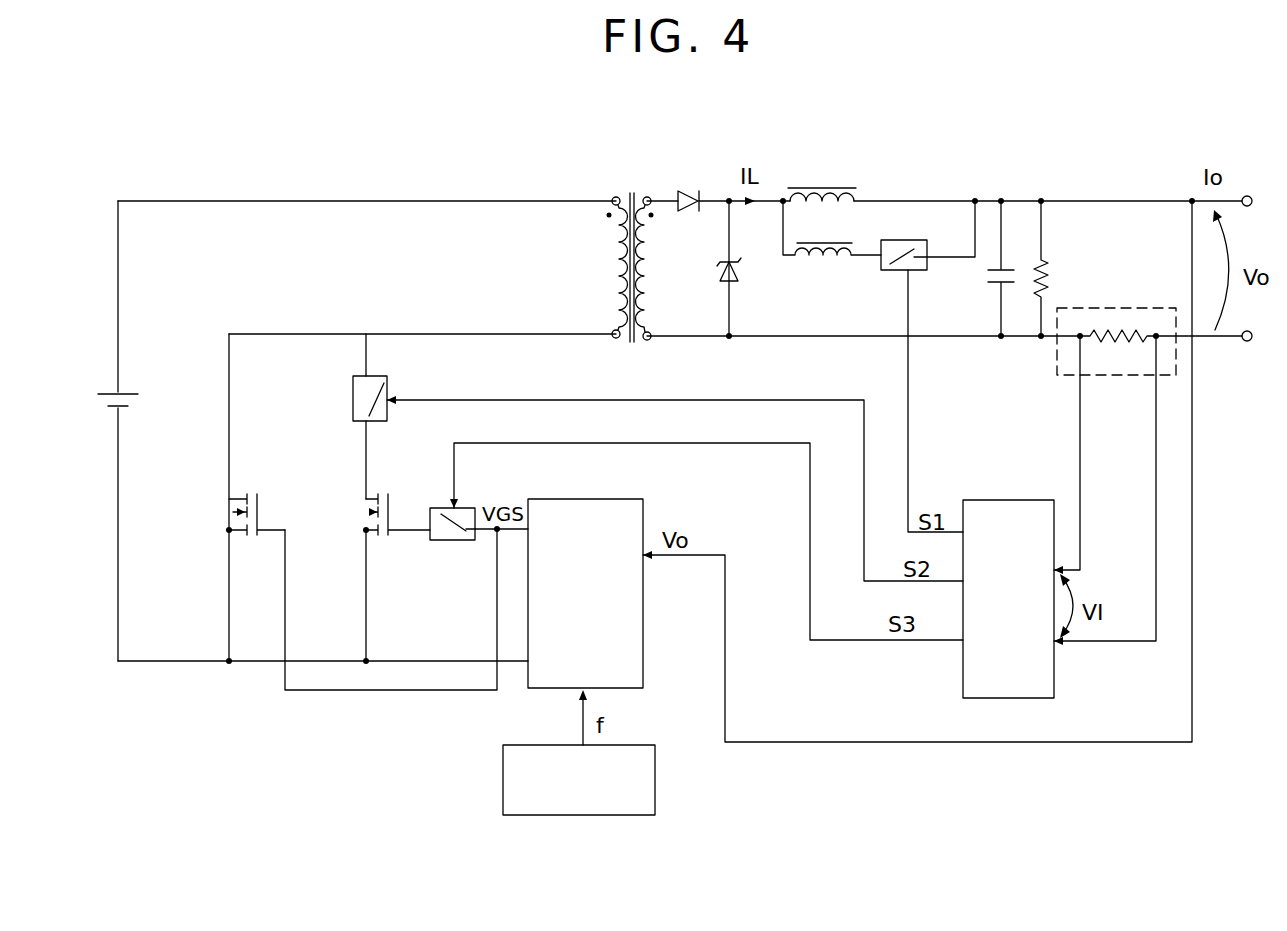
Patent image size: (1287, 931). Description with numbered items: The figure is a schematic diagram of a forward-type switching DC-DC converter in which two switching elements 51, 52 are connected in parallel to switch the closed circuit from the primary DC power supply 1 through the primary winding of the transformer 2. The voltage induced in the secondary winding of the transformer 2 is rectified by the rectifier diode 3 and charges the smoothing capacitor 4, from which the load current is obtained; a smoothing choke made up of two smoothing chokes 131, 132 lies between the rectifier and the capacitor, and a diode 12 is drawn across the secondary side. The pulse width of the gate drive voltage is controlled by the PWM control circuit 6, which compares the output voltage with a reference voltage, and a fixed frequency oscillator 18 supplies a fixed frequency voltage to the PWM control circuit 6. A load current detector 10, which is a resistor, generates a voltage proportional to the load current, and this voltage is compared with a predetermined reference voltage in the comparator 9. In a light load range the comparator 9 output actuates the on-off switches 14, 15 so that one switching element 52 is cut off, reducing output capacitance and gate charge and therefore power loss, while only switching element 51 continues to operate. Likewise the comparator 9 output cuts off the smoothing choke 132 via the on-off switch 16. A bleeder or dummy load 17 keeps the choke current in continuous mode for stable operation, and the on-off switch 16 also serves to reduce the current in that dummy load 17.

The primary DC power supply 1 is at (108, 392).
The transformer 2 is at (628, 193).
The rectifier diode 3 is at (690, 191).
The flywheel diode 12 is at (720, 276).
The smoothing choke 131 is at (826, 186).
The smoothing choke 132 is at (836, 251).
The on-off switch 16 is at (918, 243).
The smoothing capacitor 4 is at (1007, 269).
The dummy load 17 is at (1049, 269).
The load current detector 10 is at (1127, 308).
The on-off switch 15 is at (387, 378).
The switching element 51 is at (236, 496).
The switching element 52 is at (356, 503).
The on-off switch 14 is at (440, 508).
The PWM control circuit 6 is at (597, 499).
The fixed frequency oscillator 18 is at (503, 768).
The comparator 9 is at (1018, 500).